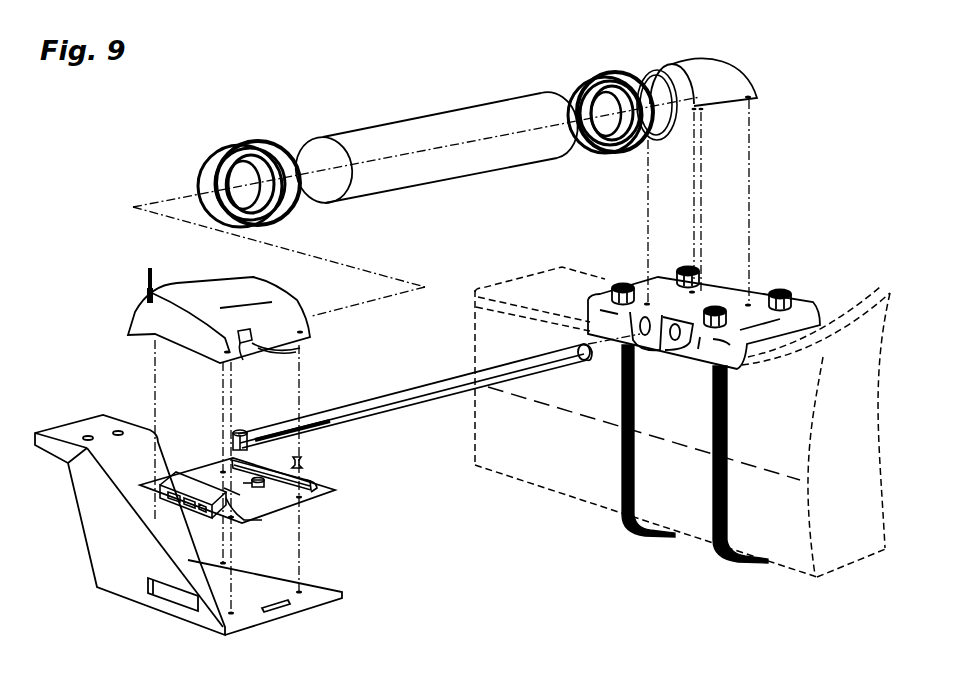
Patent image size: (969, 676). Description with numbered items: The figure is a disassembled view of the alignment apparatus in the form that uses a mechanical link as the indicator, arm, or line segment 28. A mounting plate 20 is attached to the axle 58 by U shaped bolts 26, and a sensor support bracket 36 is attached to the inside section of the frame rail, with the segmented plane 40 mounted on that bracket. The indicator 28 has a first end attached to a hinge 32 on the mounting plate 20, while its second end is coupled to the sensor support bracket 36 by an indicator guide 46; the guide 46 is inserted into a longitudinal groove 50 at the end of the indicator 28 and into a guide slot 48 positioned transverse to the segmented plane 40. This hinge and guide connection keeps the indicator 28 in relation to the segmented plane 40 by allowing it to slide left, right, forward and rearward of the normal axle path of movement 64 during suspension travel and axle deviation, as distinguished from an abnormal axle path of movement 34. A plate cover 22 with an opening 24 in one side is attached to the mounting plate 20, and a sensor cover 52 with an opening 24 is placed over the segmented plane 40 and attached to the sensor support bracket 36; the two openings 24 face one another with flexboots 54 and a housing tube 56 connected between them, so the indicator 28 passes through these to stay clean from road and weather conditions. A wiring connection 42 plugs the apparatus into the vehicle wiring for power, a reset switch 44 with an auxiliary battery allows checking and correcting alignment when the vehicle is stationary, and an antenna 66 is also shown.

The mounting plate 20 is at (800, 303).
The plate cover 22 is at (697, 64).
The opening 24 is at (662, 130).
The U type bolts 26 is at (645, 536).
The line segment, indicator, arm, or mechanical link 28 is at (420, 389).
The hinge 32 is at (622, 347).
The abnormal axle path of movement 34 is at (243, 432).
The sensor support bracket 36 is at (103, 565).
The segmented surface, segmented sensor plane, or sensor pad 40 is at (305, 500).
The wiring connection 42 is at (213, 518).
The reset switch 44 is at (242, 350).
The indicator guide 46 is at (303, 462).
The guide slot 48 is at (316, 484).
The longitudinal groove 50 is at (330, 426).
The sensor cover 52 is at (226, 279).
The flexboot 54 is at (242, 145).
The housing tube 56 is at (474, 114).
The axle 58 is at (530, 492).
The normal axle path of movement 64 is at (258, 521).
The antenna 66 is at (152, 271).